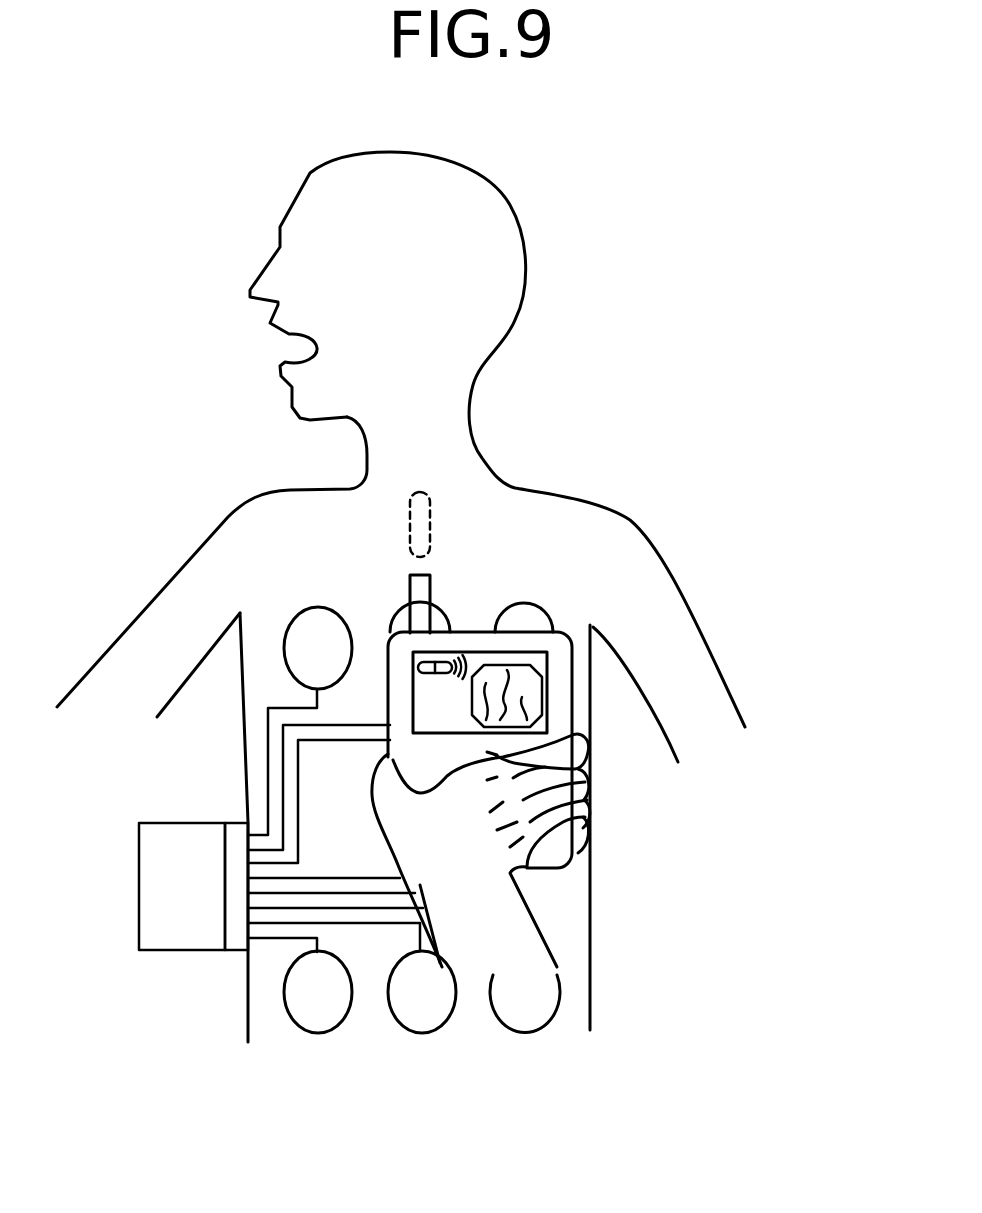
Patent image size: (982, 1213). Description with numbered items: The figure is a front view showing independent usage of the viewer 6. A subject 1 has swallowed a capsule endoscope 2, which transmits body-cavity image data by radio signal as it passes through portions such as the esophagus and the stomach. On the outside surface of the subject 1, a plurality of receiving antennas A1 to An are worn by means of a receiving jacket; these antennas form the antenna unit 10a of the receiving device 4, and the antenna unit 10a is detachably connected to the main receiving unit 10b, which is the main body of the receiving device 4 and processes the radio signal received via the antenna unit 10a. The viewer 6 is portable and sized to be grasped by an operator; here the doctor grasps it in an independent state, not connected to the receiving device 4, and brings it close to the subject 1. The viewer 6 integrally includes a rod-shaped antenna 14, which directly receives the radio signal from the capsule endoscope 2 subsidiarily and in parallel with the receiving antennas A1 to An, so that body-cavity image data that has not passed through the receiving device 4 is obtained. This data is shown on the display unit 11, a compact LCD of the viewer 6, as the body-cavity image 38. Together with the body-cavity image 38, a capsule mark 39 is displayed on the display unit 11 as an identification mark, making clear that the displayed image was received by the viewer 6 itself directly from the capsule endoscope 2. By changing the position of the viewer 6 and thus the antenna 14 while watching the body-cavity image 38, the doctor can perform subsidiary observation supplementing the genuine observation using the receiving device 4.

The subject 1 is at (505, 193).
The capsule endoscope 2 is at (423, 507).
The antenna 14 is at (423, 588).
The viewer 6 is at (590, 767).
The display unit 11 is at (435, 723).
The capsule mark 39 is at (437, 663).
The body-cavity image 38 is at (530, 697).
The receiving device 4 is at (163, 931).
The antenna unit 10a is at (240, 938).
The main receiving unit 10b is at (160, 937).
The receiving antenna A1 is at (318, 630).
The receiving antenna An is at (523, 1033).